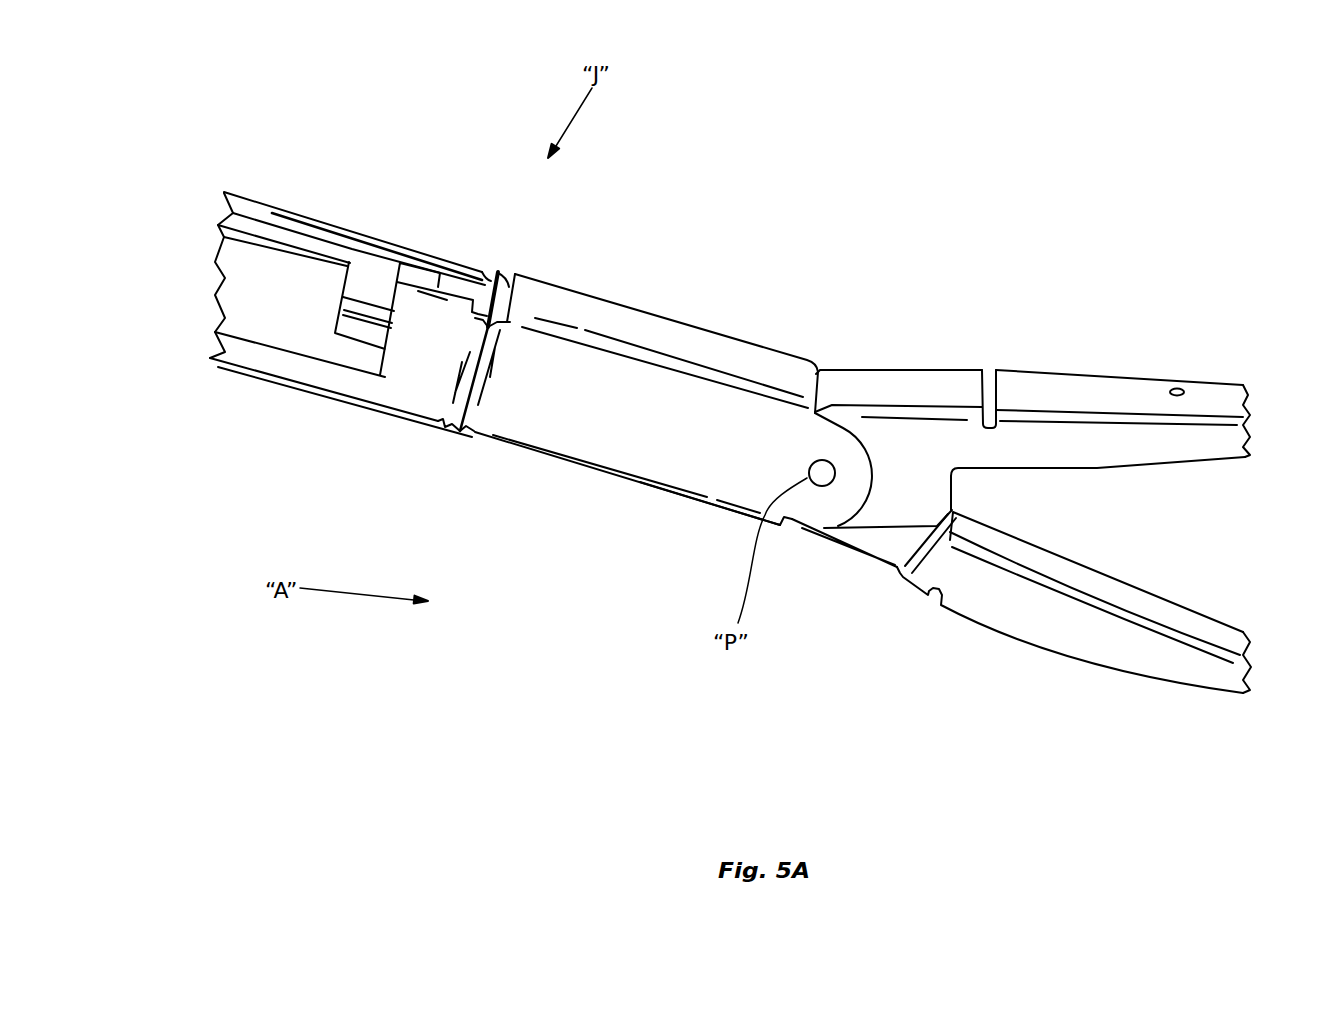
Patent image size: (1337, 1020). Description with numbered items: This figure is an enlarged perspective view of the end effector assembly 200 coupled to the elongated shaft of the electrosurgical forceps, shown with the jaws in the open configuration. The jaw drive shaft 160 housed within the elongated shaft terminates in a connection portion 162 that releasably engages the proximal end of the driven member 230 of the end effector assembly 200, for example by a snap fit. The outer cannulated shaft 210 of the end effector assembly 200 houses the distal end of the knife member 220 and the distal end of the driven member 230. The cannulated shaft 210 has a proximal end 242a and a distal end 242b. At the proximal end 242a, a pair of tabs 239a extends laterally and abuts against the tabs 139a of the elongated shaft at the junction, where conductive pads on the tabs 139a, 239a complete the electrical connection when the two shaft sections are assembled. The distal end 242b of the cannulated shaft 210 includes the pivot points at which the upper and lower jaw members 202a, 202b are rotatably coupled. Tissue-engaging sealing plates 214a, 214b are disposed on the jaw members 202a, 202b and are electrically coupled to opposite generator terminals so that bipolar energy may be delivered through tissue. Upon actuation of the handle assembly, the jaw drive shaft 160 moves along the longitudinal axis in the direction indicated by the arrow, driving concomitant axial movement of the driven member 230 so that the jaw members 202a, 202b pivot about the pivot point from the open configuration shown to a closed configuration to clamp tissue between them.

The jaw drive shaft 160 is at (258, 327).
The connection portion 162 is at (389, 268).
The knife member 220 is at (372, 306).
The driven member 230 is at (357, 332).
The tabs 139a is at (487, 273).
The tabs 239a is at (503, 280).
The end effector assembly 200 is at (857, 250).
The outer cannulated shaft 210 is at (672, 333).
The proximal end of cannulated shaft 242a is at (523, 440).
The distal end of cannulated shaft 242b is at (728, 497).
The jaw member 202a is at (1115, 385).
The jaw member 202b is at (1105, 668).
The tissue-engaging sealing plate 214a is at (1200, 462).
The tissue-engaging sealing plate 214b is at (1180, 623).